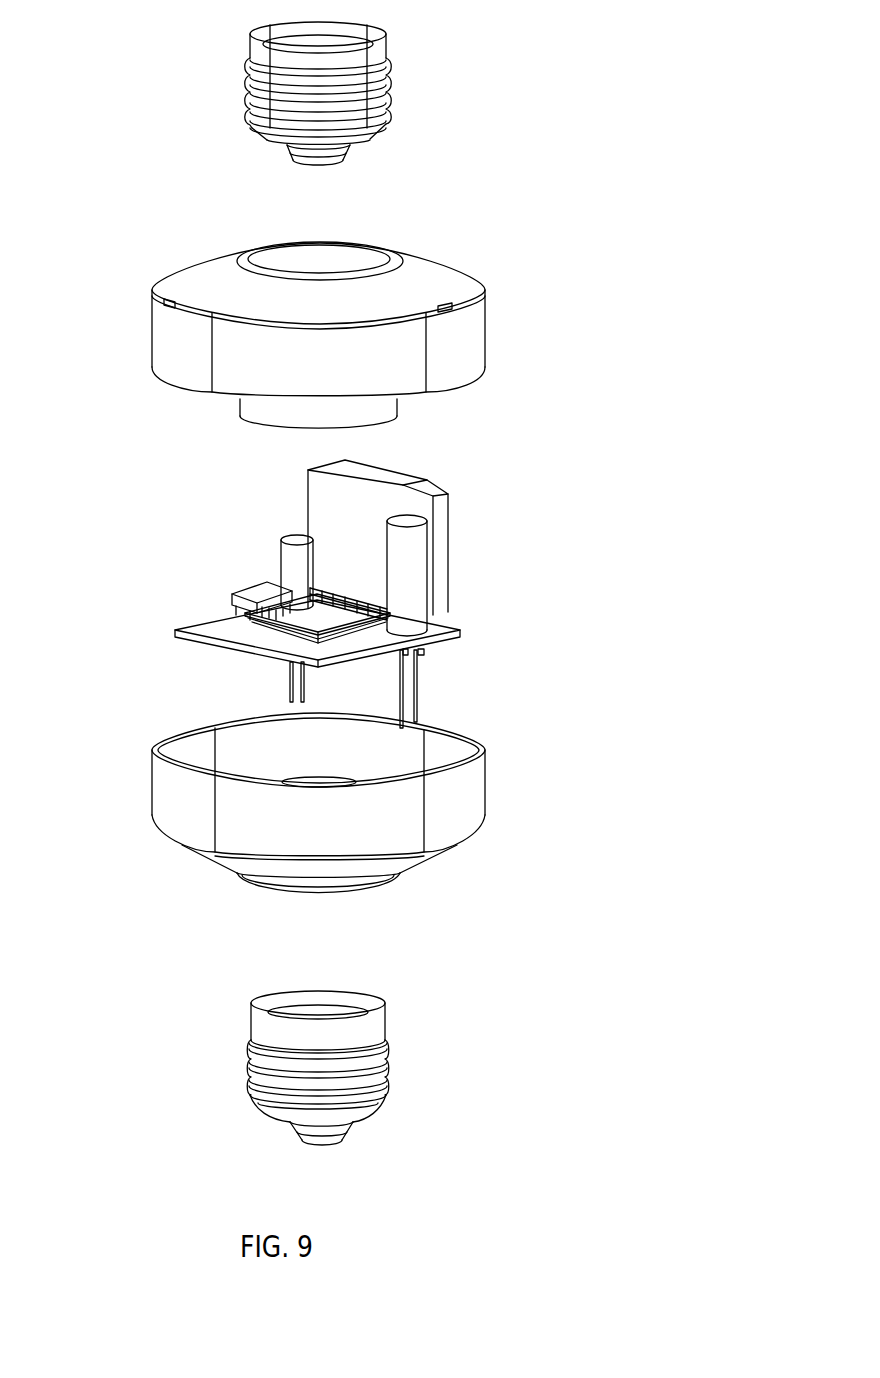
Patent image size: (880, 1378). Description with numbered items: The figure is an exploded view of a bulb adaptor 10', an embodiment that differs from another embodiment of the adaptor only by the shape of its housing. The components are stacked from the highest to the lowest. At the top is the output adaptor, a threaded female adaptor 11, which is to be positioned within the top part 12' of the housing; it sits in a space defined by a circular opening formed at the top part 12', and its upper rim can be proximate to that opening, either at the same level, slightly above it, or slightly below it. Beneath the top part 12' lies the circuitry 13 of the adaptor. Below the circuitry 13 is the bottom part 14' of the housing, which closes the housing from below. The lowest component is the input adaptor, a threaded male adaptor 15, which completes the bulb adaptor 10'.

The bulb adaptor 10' is at (298, 607).
The threaded female adaptor 11 is at (343, 85).
The top part of housing 12′ is at (331, 309).
The circuitry 13 is at (372, 637).
The bottom part of housing 14′ is at (358, 810).
The threaded male adaptor 15 is at (337, 1030).